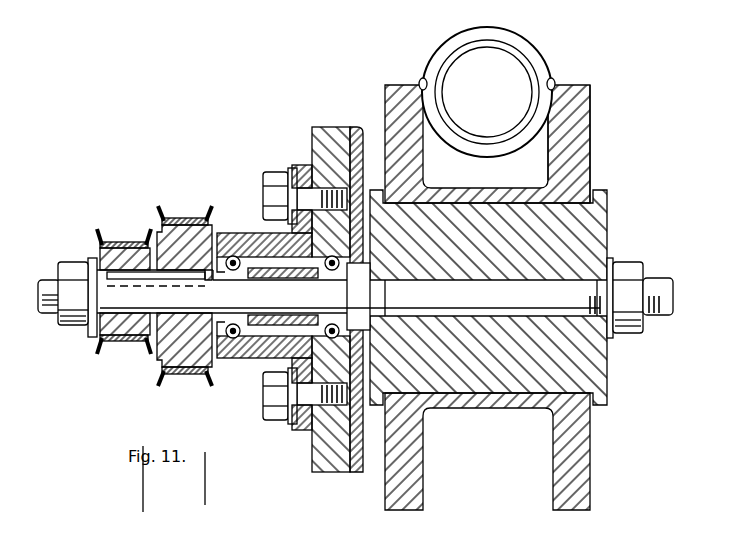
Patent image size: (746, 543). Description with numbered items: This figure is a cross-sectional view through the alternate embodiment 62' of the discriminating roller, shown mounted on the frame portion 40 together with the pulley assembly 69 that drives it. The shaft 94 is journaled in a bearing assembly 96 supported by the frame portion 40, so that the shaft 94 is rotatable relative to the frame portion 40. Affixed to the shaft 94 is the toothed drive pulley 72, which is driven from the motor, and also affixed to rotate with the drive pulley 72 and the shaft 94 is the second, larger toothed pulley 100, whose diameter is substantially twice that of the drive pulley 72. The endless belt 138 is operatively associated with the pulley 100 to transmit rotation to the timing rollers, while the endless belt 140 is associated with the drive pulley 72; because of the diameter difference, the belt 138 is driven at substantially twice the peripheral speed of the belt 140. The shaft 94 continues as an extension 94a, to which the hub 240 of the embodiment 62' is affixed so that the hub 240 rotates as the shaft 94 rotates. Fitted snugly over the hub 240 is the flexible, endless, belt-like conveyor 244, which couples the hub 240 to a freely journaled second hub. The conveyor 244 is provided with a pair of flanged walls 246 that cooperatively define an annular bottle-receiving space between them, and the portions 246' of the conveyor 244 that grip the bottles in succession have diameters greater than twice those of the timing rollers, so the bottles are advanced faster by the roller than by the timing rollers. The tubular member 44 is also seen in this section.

The frame portion 40 is at (328, 127).
The tubular member 44 is at (517, 43).
The alternate embodiment of the discriminating roller 62' is at (523, 144).
The pulley assembly 69 is at (118, 193).
The toothed drive pulley 72 is at (92, 338).
The shaft 94 is at (62, 322).
The extension of the shaft 94a is at (585, 285).
The bearing assembly 96 is at (257, 238).
The second toothed pulley 100 is at (183, 230).
The endless belt 138 is at (185, 378).
The endless belt 140 is at (122, 354).
The hub 240 is at (598, 360).
The belt-like conveyor 244 is at (591, 98).
The flanged walls 246 is at (492, 451).
The bottle-gripping portions of the conveyor 246' is at (498, 66).